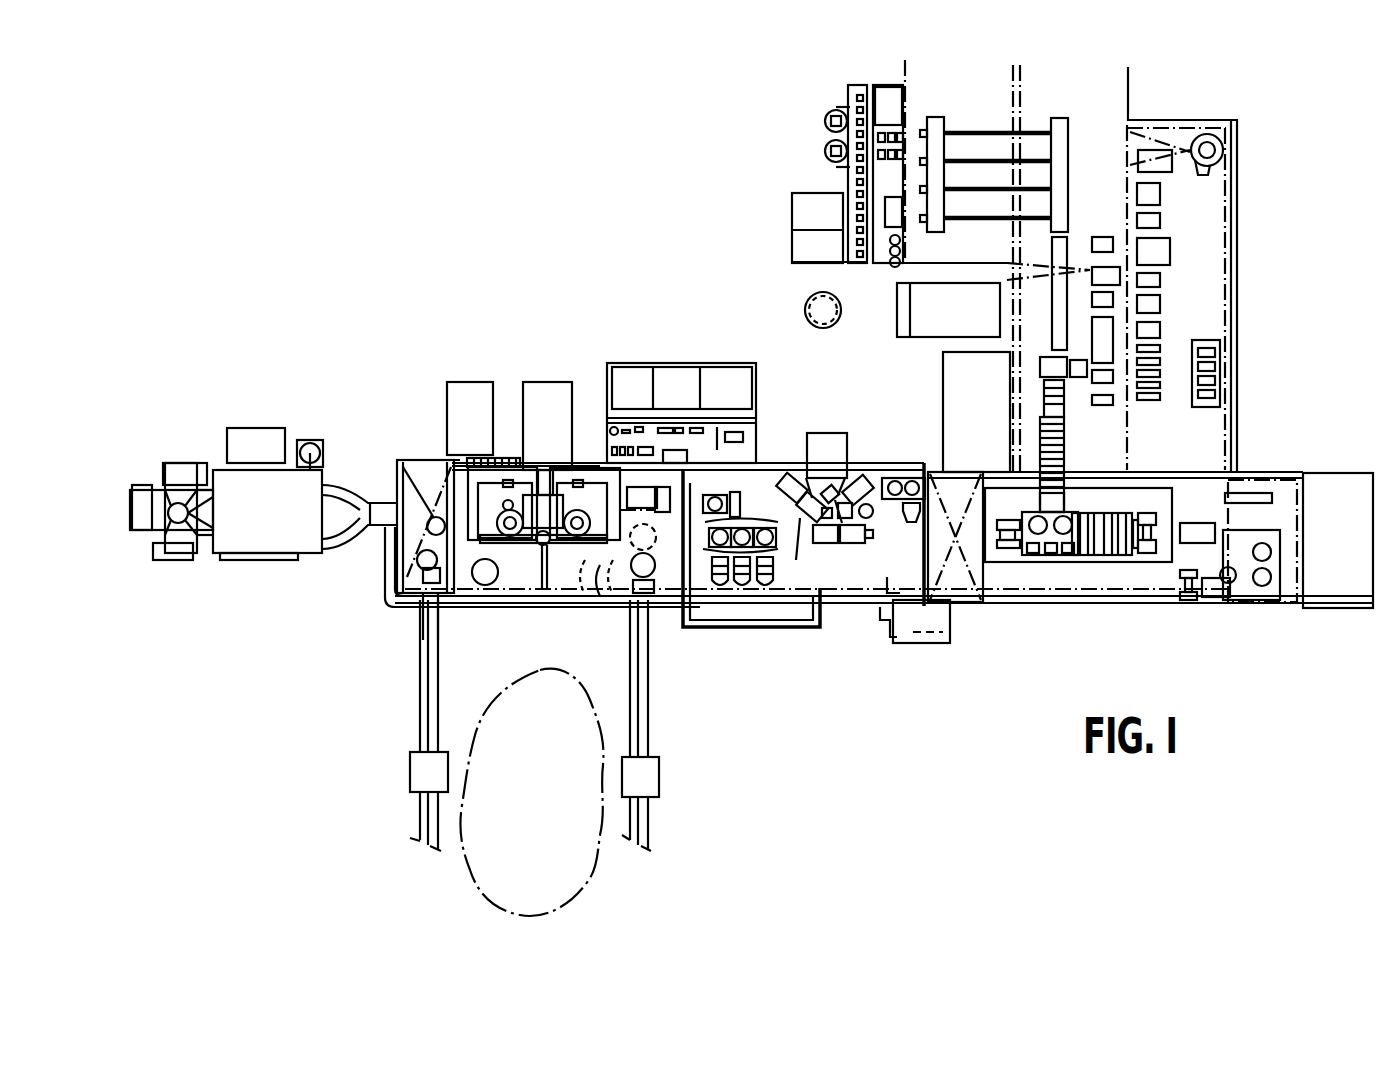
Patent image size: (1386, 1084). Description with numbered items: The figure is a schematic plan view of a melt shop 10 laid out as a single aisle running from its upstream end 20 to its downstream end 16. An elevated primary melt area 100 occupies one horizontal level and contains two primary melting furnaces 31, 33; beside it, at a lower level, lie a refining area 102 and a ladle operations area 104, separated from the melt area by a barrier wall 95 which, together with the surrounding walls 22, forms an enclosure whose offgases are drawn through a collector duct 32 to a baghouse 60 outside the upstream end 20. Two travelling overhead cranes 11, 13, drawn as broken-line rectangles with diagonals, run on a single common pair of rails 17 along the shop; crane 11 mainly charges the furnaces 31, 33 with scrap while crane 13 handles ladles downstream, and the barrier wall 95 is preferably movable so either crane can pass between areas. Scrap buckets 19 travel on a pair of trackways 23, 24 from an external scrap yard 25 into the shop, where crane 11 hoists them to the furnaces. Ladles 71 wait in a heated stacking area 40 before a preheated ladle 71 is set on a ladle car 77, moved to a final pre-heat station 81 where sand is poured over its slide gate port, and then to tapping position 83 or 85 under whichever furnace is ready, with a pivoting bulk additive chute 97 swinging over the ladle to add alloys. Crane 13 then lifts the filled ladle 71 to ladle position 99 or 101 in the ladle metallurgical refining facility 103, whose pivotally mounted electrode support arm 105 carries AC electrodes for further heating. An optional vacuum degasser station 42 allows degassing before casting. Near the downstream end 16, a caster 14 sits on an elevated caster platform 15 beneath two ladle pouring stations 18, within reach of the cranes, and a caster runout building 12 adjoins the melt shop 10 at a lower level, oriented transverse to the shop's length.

The melt shop 10 is at (912, 475).
The travelling overhead crane 11 is at (415, 460).
The caster runout building 12 is at (943, 347).
The travelling overhead crane 13 is at (965, 605).
The caster 14 is at (1100, 545).
The caster platform 15 is at (1140, 557).
The downstream end 16 is at (1265, 607).
The rails 17 is at (870, 480).
The ladle pouring stations 18 is at (1040, 560).
The scrap bucket 19 is at (440, 565).
The upstream end 20 is at (396, 472).
The walls 22 is at (430, 450).
The scrap bucket trackway 23 is at (420, 690).
The scrap bucket trackway 24 is at (655, 693).
The scrap yard 25 is at (415, 770).
The primary melting furnace 31 is at (585, 567).
The collector duct 32 is at (362, 527).
The primary melting furnace 33 is at (518, 577).
The ladle stacking or holding area 40 is at (738, 590).
The vacuum degasser station 42 is at (937, 643).
The baghouse 60 is at (280, 525).
The ladle 71 is at (740, 520).
The ladle car 77 is at (745, 487).
The final pre-heat station 81 is at (663, 497).
The tapping position 83 is at (590, 480).
The tapping position 85 is at (490, 477).
The barrier wall 95 is at (690, 565).
The bulk additive chute 97 is at (618, 577).
The ladle position 99 is at (858, 545).
The primary melt area 100 is at (547, 580).
The ladle position 101 is at (805, 532).
The refining area 102 is at (833, 545).
The ladle metallurgical refining facility 103 is at (826, 440).
The ladle operations area 104 is at (897, 637).
The electrode support arm 105 is at (795, 478).